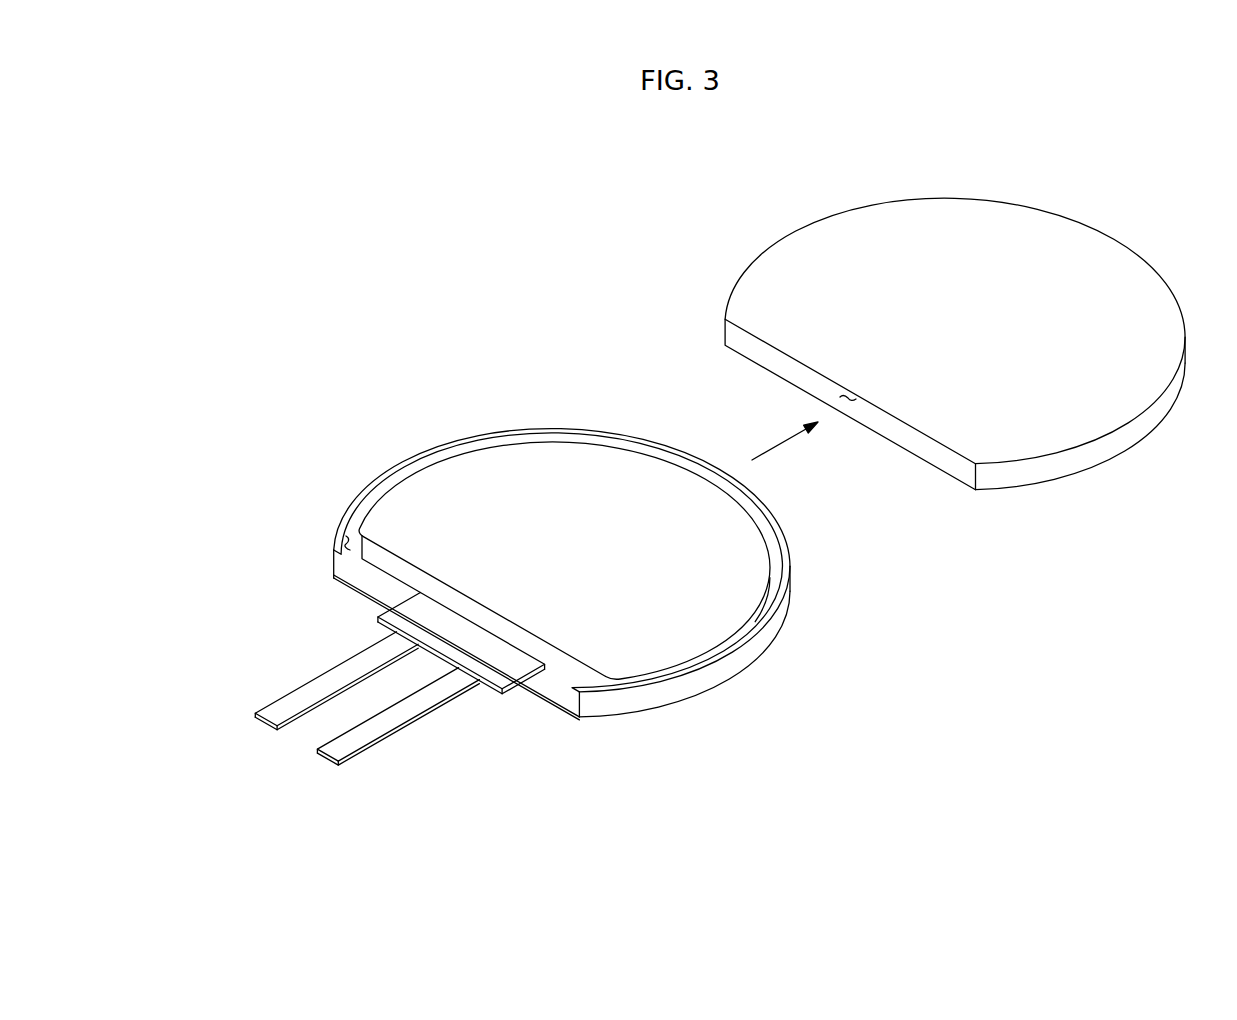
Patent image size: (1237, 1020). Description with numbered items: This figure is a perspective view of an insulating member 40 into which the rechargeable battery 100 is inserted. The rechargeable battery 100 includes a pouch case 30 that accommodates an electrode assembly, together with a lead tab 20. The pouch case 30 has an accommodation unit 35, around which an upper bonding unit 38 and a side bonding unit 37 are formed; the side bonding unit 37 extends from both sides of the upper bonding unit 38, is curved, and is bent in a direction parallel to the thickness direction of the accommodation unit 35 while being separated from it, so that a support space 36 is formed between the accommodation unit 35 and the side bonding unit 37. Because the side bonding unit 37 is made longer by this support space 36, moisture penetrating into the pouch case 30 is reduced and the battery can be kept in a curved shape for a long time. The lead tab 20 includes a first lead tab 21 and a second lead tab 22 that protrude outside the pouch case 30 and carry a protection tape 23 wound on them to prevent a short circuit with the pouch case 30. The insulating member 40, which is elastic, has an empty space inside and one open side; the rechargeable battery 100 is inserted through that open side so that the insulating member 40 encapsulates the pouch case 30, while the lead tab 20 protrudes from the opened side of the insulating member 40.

The rechargeable battery 100 is at (949, 146).
The insulating member 40 is at (1124, 225).
The pouch case 30 is at (557, 529).
The side bonding unit 37 is at (353, 505).
The support space 36 is at (345, 540).
The accommodation unit 35 is at (748, 542).
The upper bonding unit 38 is at (370, 585).
The lead tab 20 is at (381, 701).
The first lead tab 21 is at (377, 728).
The second lead tab 22 is at (268, 716).
The protection tape 23 is at (437, 654).